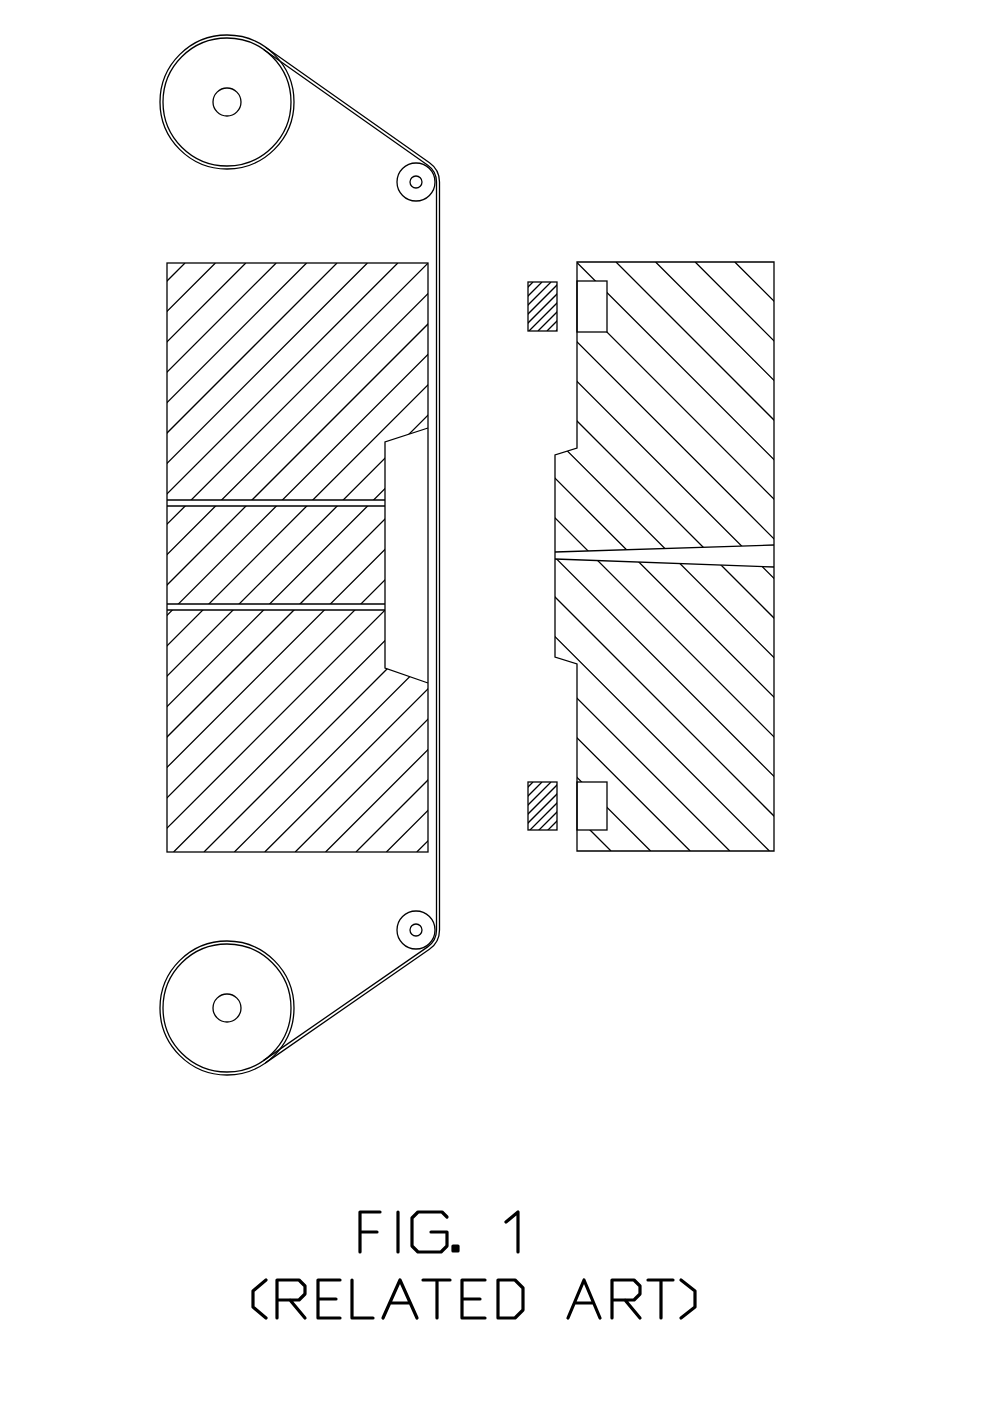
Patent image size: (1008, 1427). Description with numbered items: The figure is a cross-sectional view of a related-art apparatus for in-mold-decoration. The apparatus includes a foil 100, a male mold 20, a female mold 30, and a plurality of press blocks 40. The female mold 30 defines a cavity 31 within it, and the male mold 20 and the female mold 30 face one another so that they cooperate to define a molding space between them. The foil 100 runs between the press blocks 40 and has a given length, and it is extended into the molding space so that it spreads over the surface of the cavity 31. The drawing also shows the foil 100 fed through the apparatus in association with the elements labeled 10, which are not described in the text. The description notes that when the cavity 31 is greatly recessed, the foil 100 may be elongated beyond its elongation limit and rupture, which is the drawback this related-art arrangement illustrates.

The reel 10 is at (350, 85).
The foil 100 is at (368, 118).
The male mold 20 is at (790, 361).
The female mold 30 is at (503, 557).
The cavity 31 is at (402, 513).
The press blocks 40 is at (542, 292).